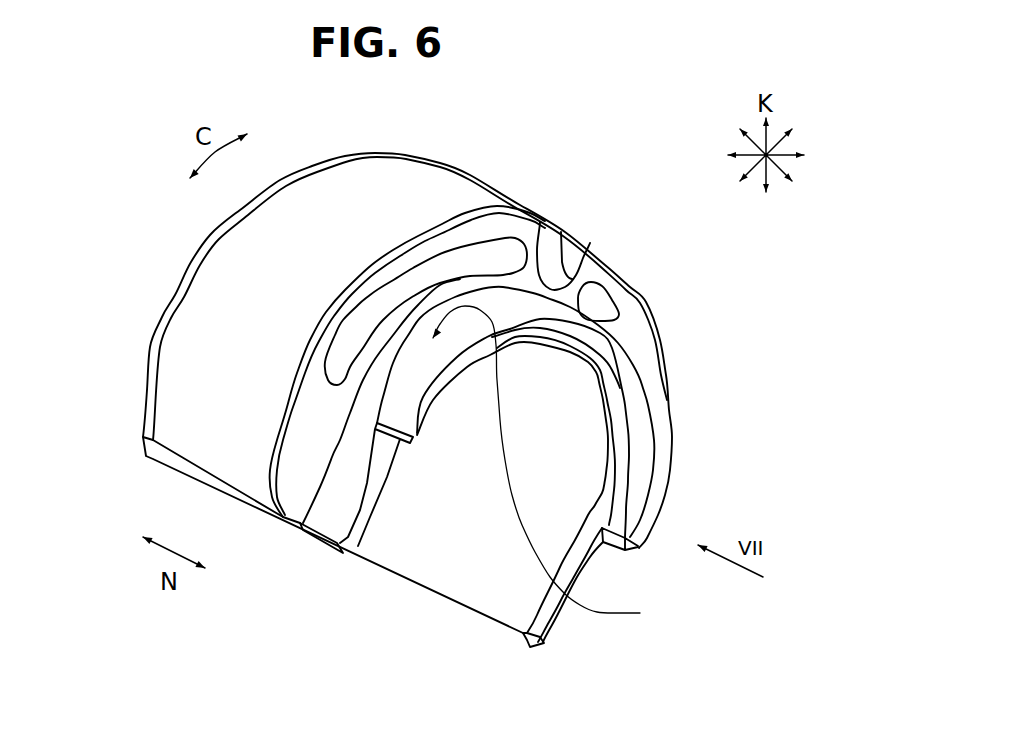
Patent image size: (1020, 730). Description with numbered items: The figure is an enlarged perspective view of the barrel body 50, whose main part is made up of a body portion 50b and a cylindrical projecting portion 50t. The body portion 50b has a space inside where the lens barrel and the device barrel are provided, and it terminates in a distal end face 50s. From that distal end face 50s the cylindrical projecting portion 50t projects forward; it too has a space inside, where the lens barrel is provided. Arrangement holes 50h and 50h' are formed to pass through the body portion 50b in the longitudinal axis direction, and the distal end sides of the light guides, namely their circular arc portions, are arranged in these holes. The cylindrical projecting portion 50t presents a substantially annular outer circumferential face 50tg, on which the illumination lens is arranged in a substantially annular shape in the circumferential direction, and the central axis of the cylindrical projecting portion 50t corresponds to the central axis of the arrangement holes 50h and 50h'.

The barrel body 50 is at (453, 148).
The body portion 50b is at (195, 393).
The distal end face 50s is at (609, 277).
The arrangement hole 50h' is at (452, 248).
The arrangement hole 50h is at (653, 299).
The cylindrical projecting portion 50t is at (402, 383).
The outer circumferential face 50tg is at (566, 467).